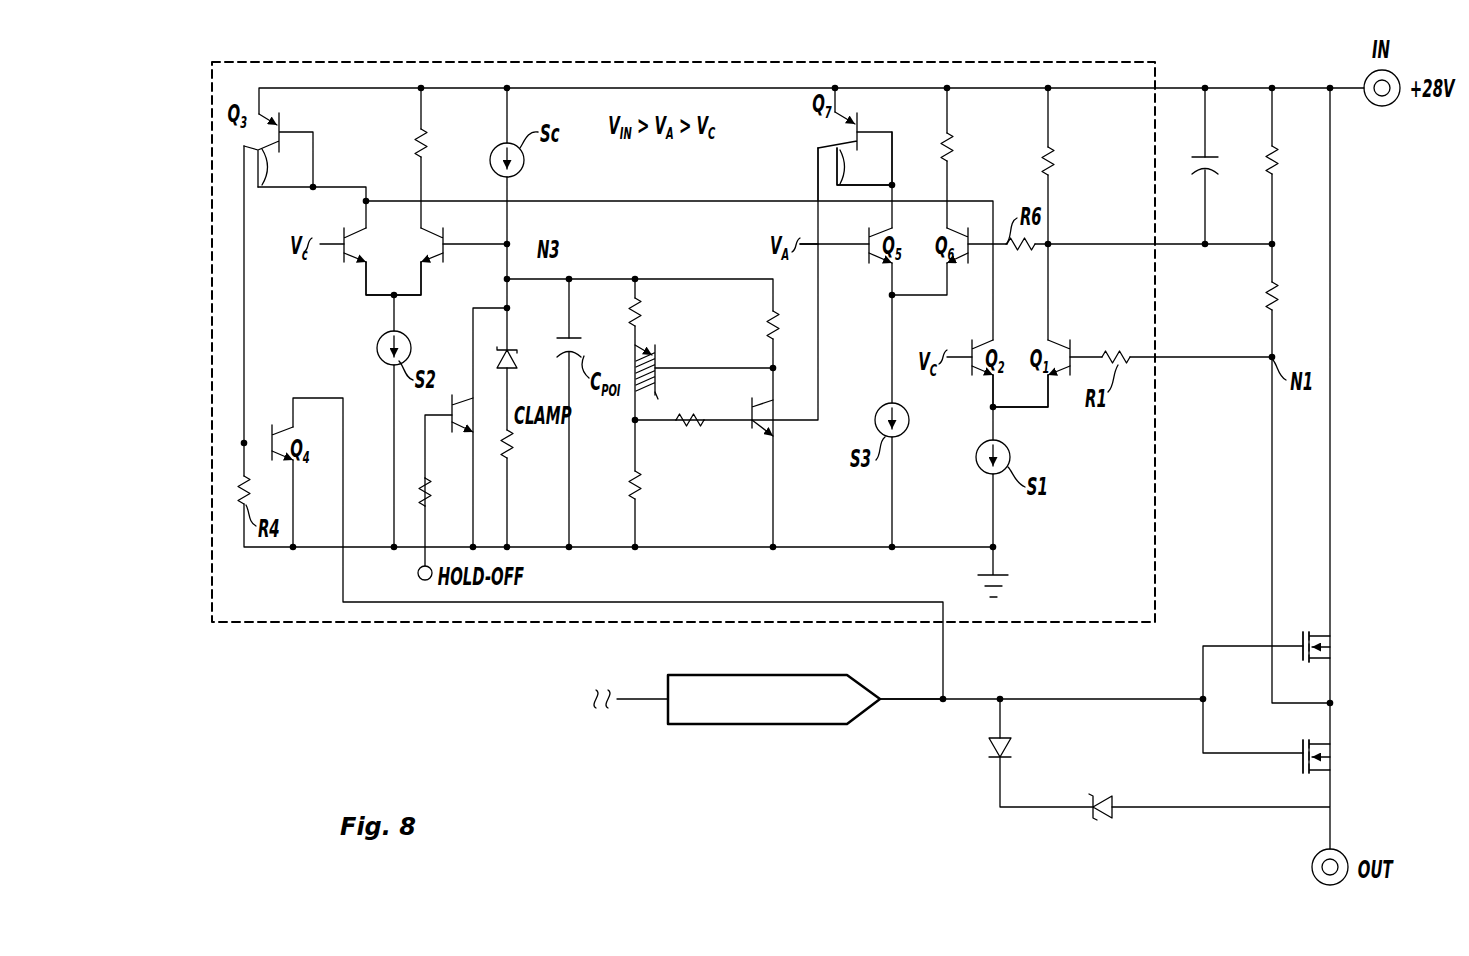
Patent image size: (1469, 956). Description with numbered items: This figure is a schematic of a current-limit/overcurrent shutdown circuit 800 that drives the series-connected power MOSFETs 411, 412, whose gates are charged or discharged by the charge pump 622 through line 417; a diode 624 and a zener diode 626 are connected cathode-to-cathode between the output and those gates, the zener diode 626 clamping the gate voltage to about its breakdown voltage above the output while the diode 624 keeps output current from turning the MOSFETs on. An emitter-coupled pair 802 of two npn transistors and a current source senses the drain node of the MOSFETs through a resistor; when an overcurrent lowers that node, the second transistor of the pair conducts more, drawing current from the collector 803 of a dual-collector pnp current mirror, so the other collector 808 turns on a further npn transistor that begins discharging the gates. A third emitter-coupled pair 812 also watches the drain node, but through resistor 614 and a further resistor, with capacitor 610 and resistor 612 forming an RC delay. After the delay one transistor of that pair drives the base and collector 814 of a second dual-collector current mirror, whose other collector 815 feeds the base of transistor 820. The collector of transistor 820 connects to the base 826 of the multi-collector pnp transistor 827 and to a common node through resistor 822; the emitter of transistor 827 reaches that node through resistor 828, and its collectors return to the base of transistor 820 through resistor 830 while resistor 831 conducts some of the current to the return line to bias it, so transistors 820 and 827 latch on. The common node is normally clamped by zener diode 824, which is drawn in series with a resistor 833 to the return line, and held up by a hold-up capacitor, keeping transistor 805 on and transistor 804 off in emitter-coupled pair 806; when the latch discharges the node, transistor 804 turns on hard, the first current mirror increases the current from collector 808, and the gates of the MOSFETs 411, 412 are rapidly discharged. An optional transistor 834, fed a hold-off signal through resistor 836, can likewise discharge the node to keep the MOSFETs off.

The current-limit/overcurrent shutdown circuit 800 is at (1012, 62).
The collector 808 is at (243, 141).
The collector 803 is at (262, 185).
The npn transistor 804 is at (343, 270).
The npn transistor 805 is at (431, 270).
The emitter-coupled pair 806 is at (350, 330).
The third emitter-coupled pair 812 is at (755, 244).
The collector 814 is at (840, 152).
The collector 815 is at (816, 148).
The npn transistor 820 is at (751, 432).
The resistor 822 is at (773, 330).
The zener diode 824 is at (510, 366).
The base 826 is at (665, 362).
The multi-collector pnp transistor 827 is at (658, 392).
The resistor 828 is at (634, 312).
The resistor 830 is at (690, 430).
The resistor 831 is at (633, 496).
The resistor 833 is at (512, 453).
The npn transistor 834 is at (453, 414).
The resistor 836 is at (428, 504).
The emitter-coupled pair 802 is at (962, 447).
The capacitor 610 is at (1218, 170).
The resistor 612 is at (1275, 172).
The resistor 614 is at (1275, 308).
The first power MOSFET 411 is at (1318, 657).
The second power MOSFET 412 is at (1318, 767).
The line 417 is at (907, 700).
The charge pump 622 is at (703, 725).
The diode 624 is at (1008, 750).
The zener diode 626 is at (1100, 822).